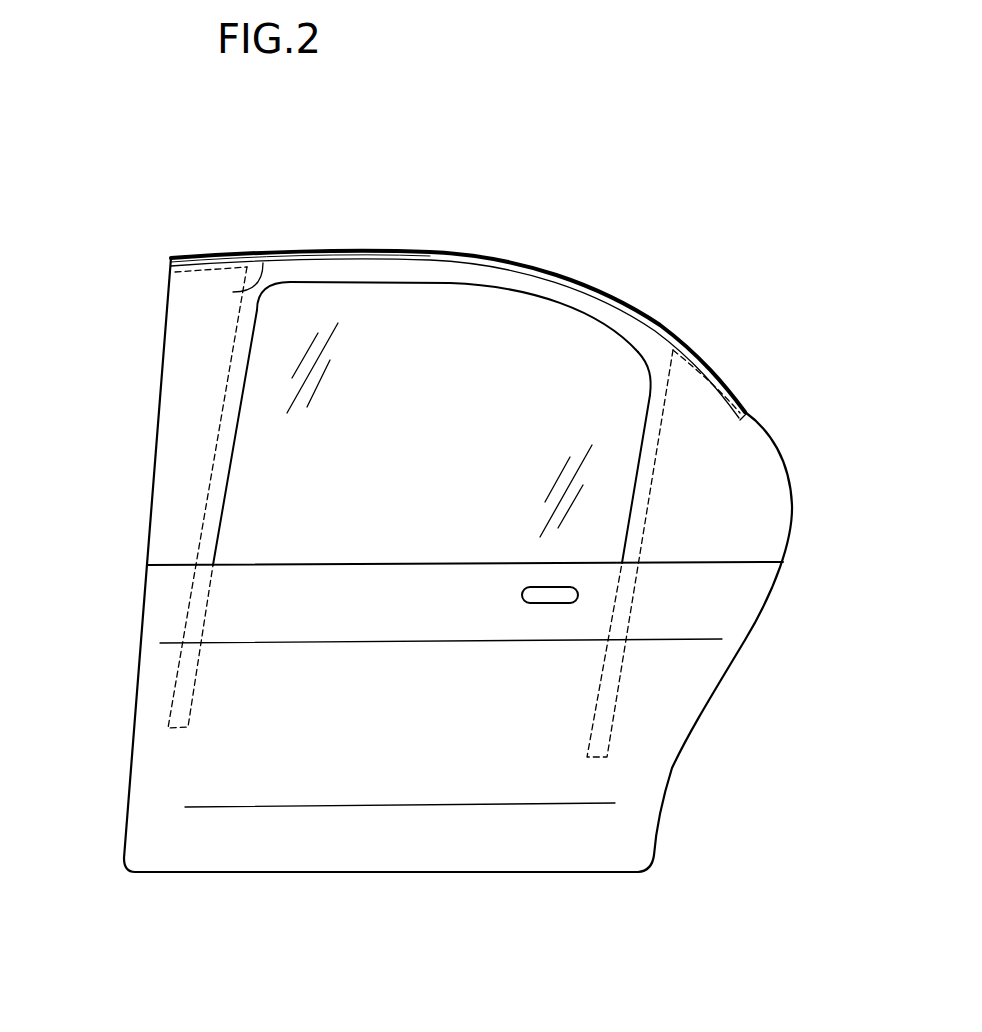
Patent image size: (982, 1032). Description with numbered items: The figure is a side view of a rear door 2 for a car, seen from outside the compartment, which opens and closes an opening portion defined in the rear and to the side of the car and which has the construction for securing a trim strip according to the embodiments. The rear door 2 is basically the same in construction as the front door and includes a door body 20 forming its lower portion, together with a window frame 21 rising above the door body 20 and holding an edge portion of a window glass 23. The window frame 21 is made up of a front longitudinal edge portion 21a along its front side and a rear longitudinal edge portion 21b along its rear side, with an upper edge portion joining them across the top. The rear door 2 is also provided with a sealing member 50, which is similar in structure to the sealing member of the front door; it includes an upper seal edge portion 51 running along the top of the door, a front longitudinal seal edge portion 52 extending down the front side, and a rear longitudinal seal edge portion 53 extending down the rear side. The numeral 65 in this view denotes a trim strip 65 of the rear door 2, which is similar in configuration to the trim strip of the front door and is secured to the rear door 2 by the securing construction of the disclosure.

The rear door 2 is at (441, 209).
The door body 20 is at (674, 769).
The window frame 21 is at (787, 460).
The front longitudinal edge portion 21a is at (177, 450).
The rear longitudinal edge portion 21b is at (540, 288).
The window glass 23 is at (543, 347).
The sealing member 50 is at (264, 252).
The upper seal edge portion 51 is at (337, 270).
The front longitudinal seal edge portion 52 is at (183, 690).
The rear longitudinal seal edge portion 53 is at (613, 695).
The trim strip 65 is at (233, 292).